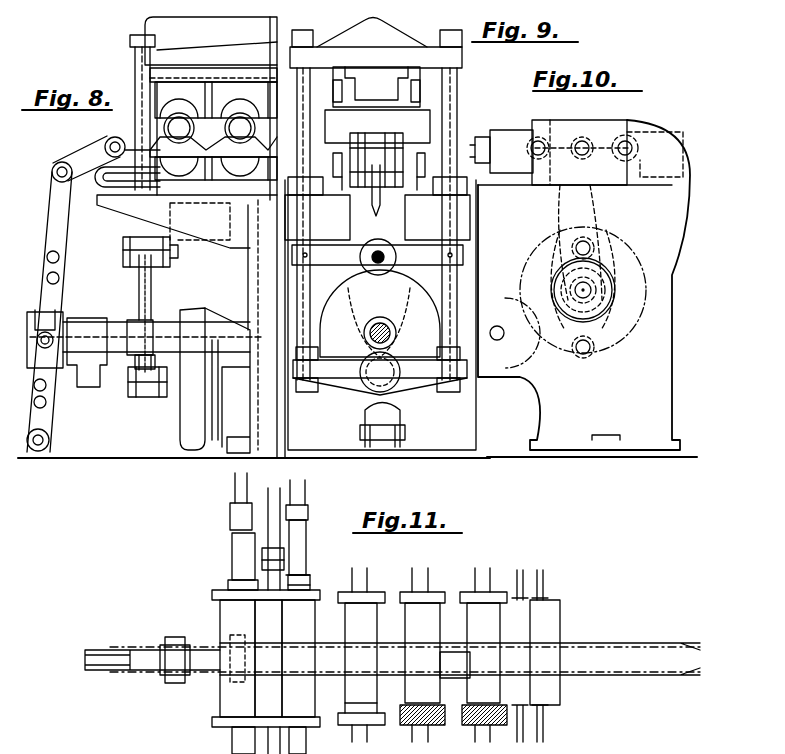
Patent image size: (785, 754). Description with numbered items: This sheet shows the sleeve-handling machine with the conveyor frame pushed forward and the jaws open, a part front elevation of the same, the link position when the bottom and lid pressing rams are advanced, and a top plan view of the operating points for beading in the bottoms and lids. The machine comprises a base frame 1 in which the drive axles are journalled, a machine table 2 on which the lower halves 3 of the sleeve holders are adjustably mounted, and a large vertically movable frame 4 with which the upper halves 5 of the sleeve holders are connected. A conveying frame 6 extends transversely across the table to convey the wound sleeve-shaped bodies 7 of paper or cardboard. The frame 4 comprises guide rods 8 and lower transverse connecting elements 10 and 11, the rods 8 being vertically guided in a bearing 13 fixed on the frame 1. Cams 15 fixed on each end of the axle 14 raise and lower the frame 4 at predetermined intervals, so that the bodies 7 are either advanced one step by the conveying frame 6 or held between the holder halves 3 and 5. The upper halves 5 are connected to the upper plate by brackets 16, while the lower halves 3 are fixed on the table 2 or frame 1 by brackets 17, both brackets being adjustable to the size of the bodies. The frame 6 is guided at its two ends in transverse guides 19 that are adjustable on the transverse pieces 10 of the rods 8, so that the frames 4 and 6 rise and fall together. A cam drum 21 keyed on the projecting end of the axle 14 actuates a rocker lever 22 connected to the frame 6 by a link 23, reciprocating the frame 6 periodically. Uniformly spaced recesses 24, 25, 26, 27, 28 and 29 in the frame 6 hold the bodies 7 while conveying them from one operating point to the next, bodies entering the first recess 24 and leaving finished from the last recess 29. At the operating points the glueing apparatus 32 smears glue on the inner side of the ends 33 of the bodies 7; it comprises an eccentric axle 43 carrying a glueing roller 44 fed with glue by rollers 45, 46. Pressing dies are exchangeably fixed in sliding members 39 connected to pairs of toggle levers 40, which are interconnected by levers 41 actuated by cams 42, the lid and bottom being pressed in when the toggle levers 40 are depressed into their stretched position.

In FIG. 8, the base frame 1 is at (228, 440).
In FIG. 9, the base frame 1 is at (462, 440).
In FIG. 10, the base frame 1 is at (592, 443).
In FIG. 8, the machine table 2 is at (220, 237).
In FIG. 8, the lower halves of the sleeve holders 3 is at (225, 172).
In FIG. 9, the lower halves of the sleeve holders 3 is at (422, 160).
In FIG. 8, the vertically movable frame 4 is at (250, 35).
In FIG. 9, the vertically movable frame 4 is at (402, 38).
In FIG. 8, the upper halves of the sleeve holders 5 is at (209, 95).
In FIG. 9, the upper halves of the sleeve holders 5 is at (410, 97).
In FIG. 8, the conveying frame 6 is at (127, 137).
In FIG. 9, the conveying frame 6 is at (392, 135).
In FIG. 11, the conveying frame 6 is at (220, 645).
In FIG. 8, the sleeve-shaped bodies 7 is at (239, 118).
In FIG. 9, the sleeve-shaped bodies 7 is at (420, 120).
In FIG. 11, the sleeve-shaped bodies 7 is at (222, 624).
In FIG. 8, the guide rods 8 is at (138, 88).
In FIG. 9, the guide rods 8 is at (297, 112).
In FIG. 8, the lower transverse connecting element 10 is at (123, 246).
In FIG. 9, the lower transverse connecting element 10 is at (333, 262).
In FIG. 8, the lower transverse connecting element 11 is at (135, 397).
In FIG. 9, the lower transverse connecting element 11 is at (345, 378).
In FIG. 8, the bearing 13 is at (133, 362).
In FIG. 8, the axle 14 is at (118, 315).
In FIG. 9, the axle 14 is at (380, 318).
In FIG. 8, the cam 15 is at (137, 282).
In FIG. 9, the cam 15 is at (425, 300).
In FIG. 9, the bracket 16 is at (392, 72).
In FIG. 9, the bracket 17 is at (416, 190).
In FIG. 8, the transverse guide 19 is at (172, 258).
In FIG. 9, the transverse guide 19 is at (381, 195).
In FIG. 11, the transverse guide 19 is at (165, 670).
In FIG. 8, the cam drum 21 is at (58, 380).
In FIG. 8, the rocker lever 22 is at (67, 223).
In FIG. 8, the link 23 is at (78, 160).
In FIG. 8, the recess 24 is at (213, 145).
In FIG. 11, the recess 24 is at (222, 680).
In FIG. 8, the recess 25 is at (266, 142).
In FIG. 11, the recess 25 is at (268, 658).
In FIG. 11, the recess 26 is at (340, 678).
In FIG. 11, the recess 27 is at (405, 673).
In FIG. 11, the recess 28 is at (468, 673).
In FIG. 11, the recess 29 is at (525, 678).
In FIG. 11, the glueing apparatus 32 is at (300, 548).
In FIG. 11, the ends of the hollow bodies 33 is at (308, 598).
In FIG. 10, the sliding member 39 is at (485, 130).
In FIG. 10, the toggle levers 40 is at (600, 145).
In FIG. 10, the lever 41 is at (600, 208).
In FIG. 10, the cam 42 is at (625, 265).
In FIG. 11, the eccentric axle 43 is at (308, 576).
In FIG. 11, the glueing roller 44 is at (310, 587).
In FIG. 11, the roller 45 is at (228, 587).
In FIG. 11, the roller 46 is at (270, 600).